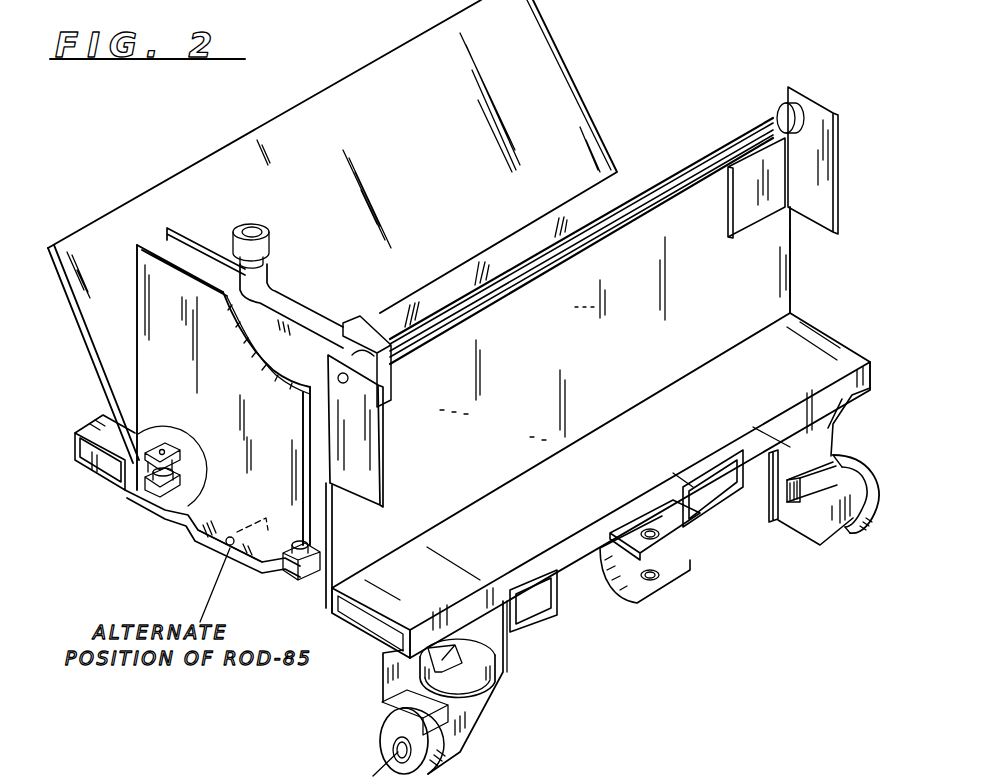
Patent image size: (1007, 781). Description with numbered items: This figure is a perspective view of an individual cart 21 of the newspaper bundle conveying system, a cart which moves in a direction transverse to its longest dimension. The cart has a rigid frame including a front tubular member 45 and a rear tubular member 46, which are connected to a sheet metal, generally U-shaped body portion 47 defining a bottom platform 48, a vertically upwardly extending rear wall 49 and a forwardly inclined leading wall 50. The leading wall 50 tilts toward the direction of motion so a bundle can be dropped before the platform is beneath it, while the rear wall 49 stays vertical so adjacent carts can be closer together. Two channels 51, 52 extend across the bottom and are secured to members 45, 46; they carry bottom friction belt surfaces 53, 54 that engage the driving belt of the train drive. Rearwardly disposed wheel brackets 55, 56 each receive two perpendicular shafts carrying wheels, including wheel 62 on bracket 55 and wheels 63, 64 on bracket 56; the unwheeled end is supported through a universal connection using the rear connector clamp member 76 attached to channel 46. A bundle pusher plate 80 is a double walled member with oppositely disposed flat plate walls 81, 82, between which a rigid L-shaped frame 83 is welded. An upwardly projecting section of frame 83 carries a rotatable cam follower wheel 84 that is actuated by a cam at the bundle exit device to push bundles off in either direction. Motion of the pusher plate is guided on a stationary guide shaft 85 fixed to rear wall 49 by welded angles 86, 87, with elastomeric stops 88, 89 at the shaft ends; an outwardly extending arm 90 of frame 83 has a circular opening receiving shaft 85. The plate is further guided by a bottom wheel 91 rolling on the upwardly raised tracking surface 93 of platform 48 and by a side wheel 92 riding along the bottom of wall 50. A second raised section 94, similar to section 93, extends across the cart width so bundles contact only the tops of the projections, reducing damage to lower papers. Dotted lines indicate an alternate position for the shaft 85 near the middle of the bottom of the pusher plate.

The cart 21 is at (803, 305).
The front tubular member 45 is at (98, 418).
The rear tubular member 46 is at (612, 484).
The U-shaped body portion 47 is at (238, 562).
The bottom platform 48 is at (203, 542).
The rear wall 49 is at (578, 357).
The leading wall 50 is at (405, 166).
The channel 51 is at (527, 590).
The channel 52 is at (766, 456).
The bottom friction belt surface 53 is at (550, 613).
The bottom friction belt surface 54 is at (713, 523).
The wheel bracket 55 is at (475, 720).
The wheel bracket 56 is at (832, 540).
The wheel 62 is at (490, 687).
The wheel 63 is at (878, 498).
The wheel 64 is at (835, 458).
The rear connector clamp member 76 is at (643, 592).
The bundle pusher plate 80 is at (312, 293).
The flat plate wall 81 is at (143, 297).
The flat plate wall 82 is at (178, 238).
The L-shaped frame 83 is at (300, 303).
The cam follower wheel 84 is at (272, 240).
The guide shaft 85 is at (602, 228).
The angle 86 is at (355, 448).
The angle 87 is at (820, 170).
The elastomeric stop 88 is at (372, 363).
The elastomeric stop 89 is at (780, 103).
The arm 90 is at (347, 327).
The bottom wheel 91 is at (313, 537).
The side wheel 92 is at (147, 497).
The raised tracking surface 93 is at (283, 583).
The raised section 94 is at (182, 515).